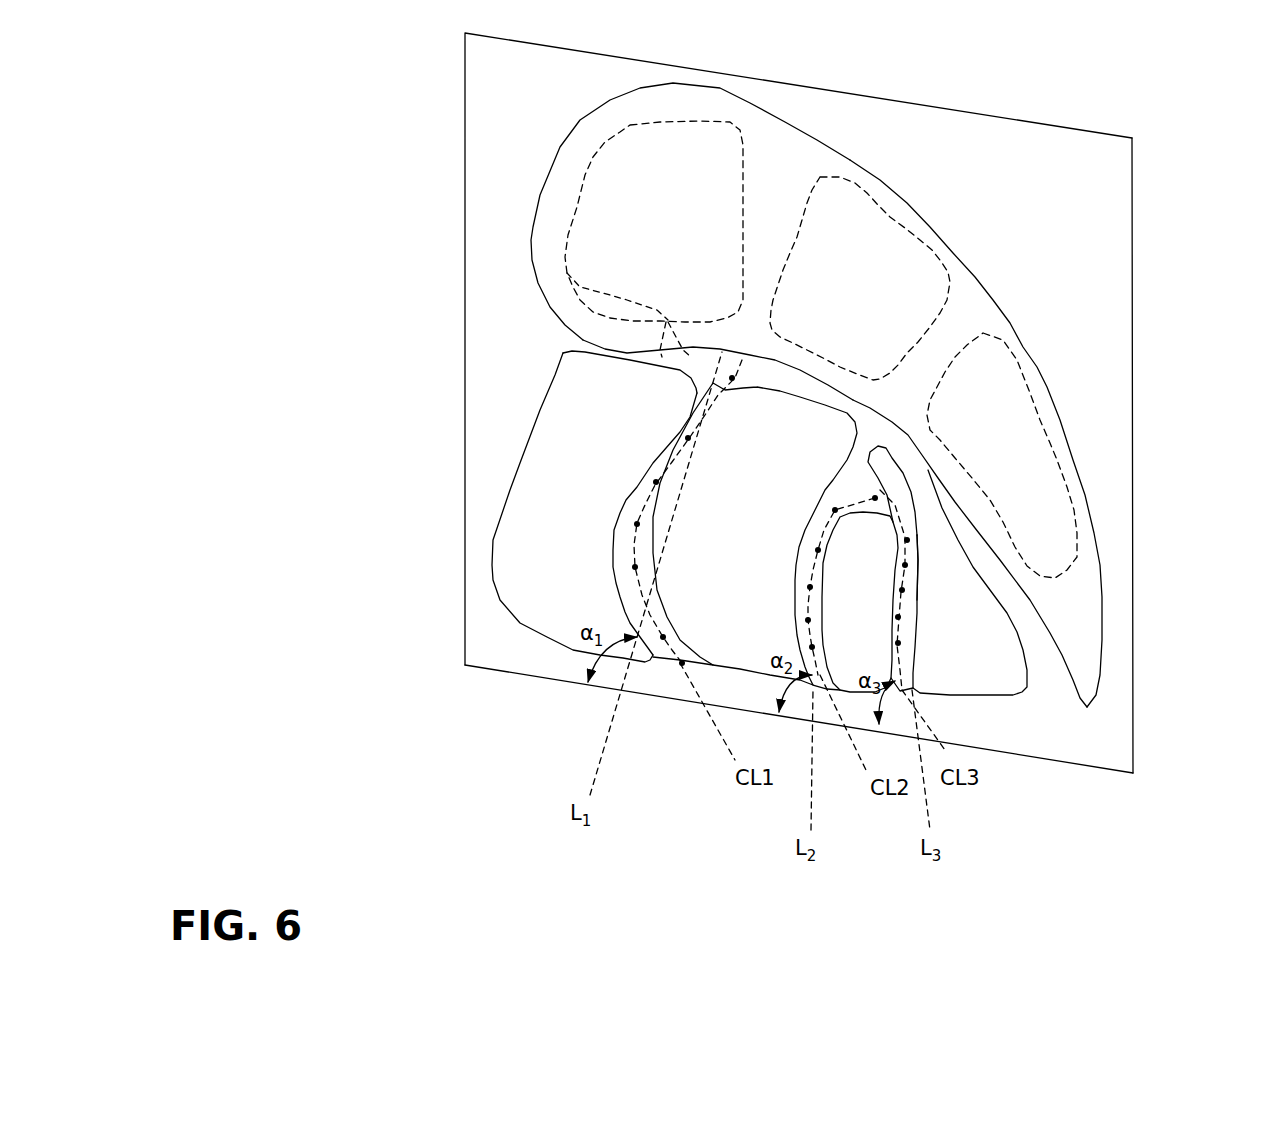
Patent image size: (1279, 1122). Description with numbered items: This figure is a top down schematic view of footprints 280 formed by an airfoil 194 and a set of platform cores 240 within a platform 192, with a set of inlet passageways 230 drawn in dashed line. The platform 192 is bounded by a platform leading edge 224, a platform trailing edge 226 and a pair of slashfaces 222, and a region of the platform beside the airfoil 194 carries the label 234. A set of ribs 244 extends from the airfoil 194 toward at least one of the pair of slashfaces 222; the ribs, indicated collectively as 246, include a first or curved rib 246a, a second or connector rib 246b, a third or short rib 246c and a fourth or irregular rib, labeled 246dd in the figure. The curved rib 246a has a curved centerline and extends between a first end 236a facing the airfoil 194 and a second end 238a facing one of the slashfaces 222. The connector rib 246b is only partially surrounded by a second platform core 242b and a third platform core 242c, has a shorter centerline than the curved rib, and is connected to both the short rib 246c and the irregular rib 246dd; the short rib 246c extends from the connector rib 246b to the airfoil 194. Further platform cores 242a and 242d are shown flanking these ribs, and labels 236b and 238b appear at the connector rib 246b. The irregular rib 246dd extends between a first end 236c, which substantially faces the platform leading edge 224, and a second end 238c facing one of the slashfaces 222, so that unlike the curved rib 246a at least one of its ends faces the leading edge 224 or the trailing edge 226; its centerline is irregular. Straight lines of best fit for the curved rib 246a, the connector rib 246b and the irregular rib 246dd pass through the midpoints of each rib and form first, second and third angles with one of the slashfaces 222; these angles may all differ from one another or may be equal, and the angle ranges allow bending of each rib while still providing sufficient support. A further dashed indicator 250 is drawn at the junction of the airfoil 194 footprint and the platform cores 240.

The platform 192 is at (794, 370).
The airfoil 194 is at (803, 140).
The pair of slashfaces 222 is at (508, 689).
The platform leading edge 224 is at (455, 634).
The platform trailing edge 226 is at (1150, 700).
The set of inlet passageways 230 is at (585, 175).
The platform surface 234 is at (1078, 240).
The first end 236a is at (565, 273).
The hidden wall 236b is at (880, 462).
The first end 236c is at (884, 491).
The second end 238a is at (666, 665).
The outlet of second rib 238b is at (823, 690).
The second end 238c is at (925, 692).
The set of platform cores 240 is at (516, 581).
The first pocket 242a is at (580, 573).
The second platform core 242b is at (756, 573).
The third platform core 242c is at (880, 606).
The fourth pocket 242d is at (986, 653).
The set of ribs 244 is at (603, 519).
The ribs 246 is at (527, 513).
The curved rib 246a is at (637, 495).
The connector rib 246b is at (805, 598).
The short rib 246c is at (862, 467).
The rib wall 246dd is at (914, 601).
The lobe wall 250 is at (612, 338).
The footprints 280 is at (1060, 375).